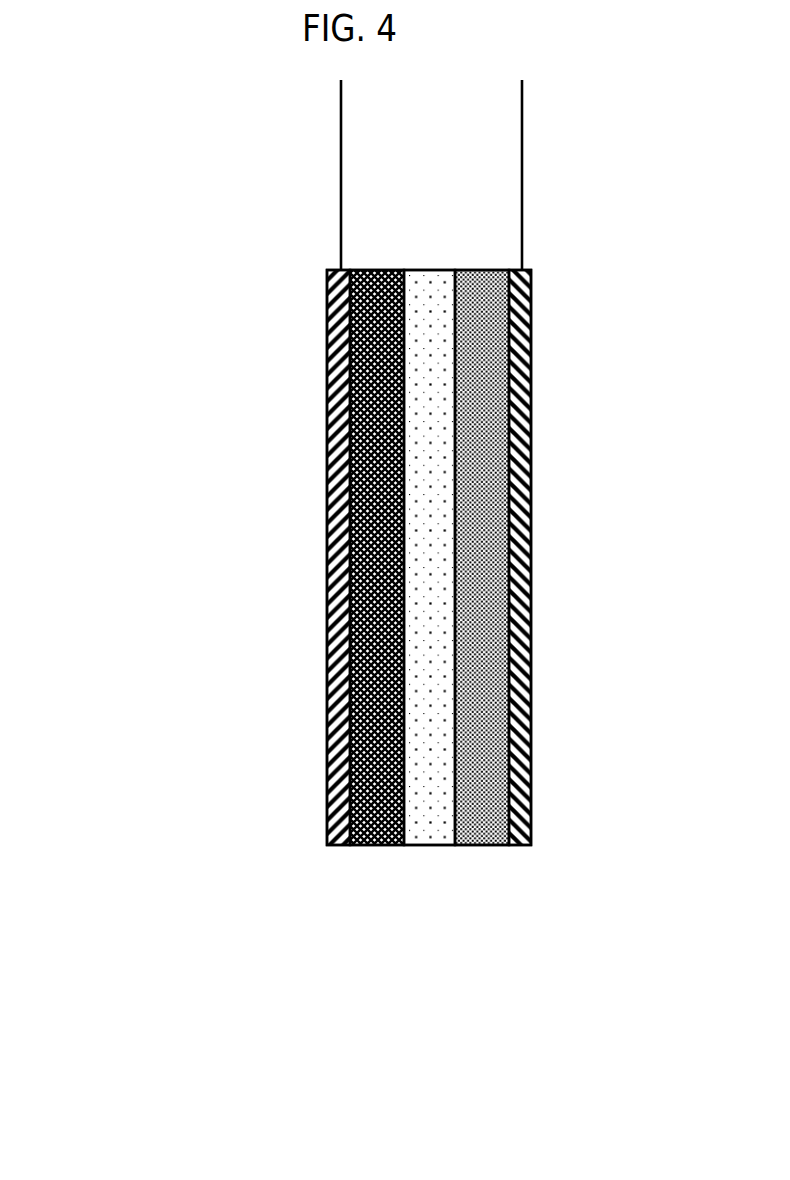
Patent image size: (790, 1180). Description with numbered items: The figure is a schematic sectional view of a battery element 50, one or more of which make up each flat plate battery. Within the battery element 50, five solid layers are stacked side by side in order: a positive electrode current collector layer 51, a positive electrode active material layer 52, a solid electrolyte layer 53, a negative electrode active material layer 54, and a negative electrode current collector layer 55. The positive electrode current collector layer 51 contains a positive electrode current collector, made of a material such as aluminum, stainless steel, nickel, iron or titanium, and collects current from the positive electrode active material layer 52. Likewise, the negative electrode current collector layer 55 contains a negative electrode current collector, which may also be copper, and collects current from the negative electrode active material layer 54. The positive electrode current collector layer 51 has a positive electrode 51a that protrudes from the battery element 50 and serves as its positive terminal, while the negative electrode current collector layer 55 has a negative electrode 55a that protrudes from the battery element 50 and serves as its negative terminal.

The battery element 50 is at (207, 425).
The positive electrode current collector layer 51 is at (337, 845).
The positive electrode 51a is at (341, 198).
The positive electrode active material layer 52 is at (373, 845).
The solid electrolyte layer 53 is at (433, 845).
The negative electrode active material layer 54 is at (475, 845).
The negative electrode current collector layer 55 is at (518, 845).
The negative electrode 55a is at (522, 200).